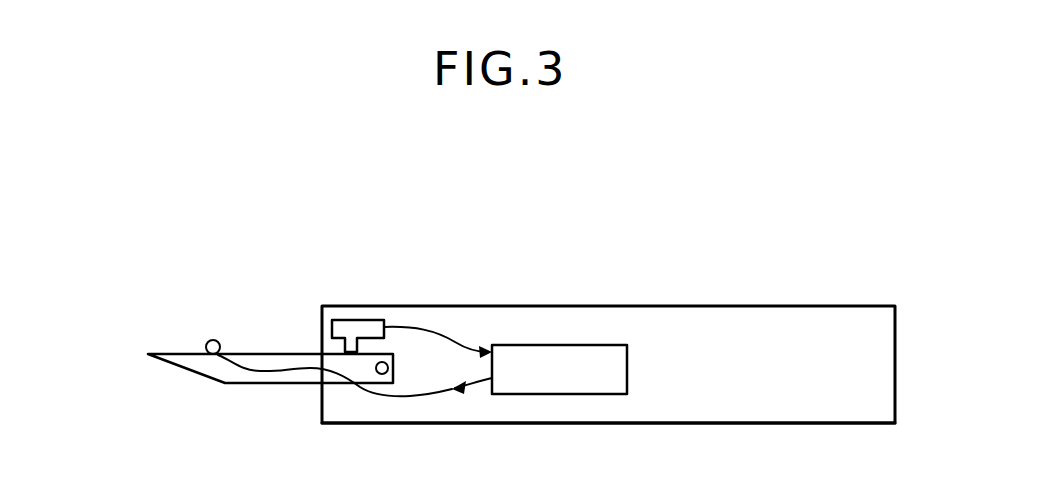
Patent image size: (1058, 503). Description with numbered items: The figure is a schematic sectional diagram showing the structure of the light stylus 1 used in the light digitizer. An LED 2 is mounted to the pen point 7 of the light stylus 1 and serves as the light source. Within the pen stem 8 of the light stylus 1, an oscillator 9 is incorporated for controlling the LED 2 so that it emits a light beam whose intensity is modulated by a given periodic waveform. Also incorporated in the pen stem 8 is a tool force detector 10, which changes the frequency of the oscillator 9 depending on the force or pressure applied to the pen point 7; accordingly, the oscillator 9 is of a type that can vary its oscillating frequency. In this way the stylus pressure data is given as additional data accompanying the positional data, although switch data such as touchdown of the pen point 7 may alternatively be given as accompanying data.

The light stylus 1 is at (658, 301).
The LED 2 is at (187, 307).
The pen point 7 is at (260, 407).
The pen stem 8 is at (757, 423).
The oscillator 9 is at (537, 380).
The tool force detector 10 is at (334, 261).